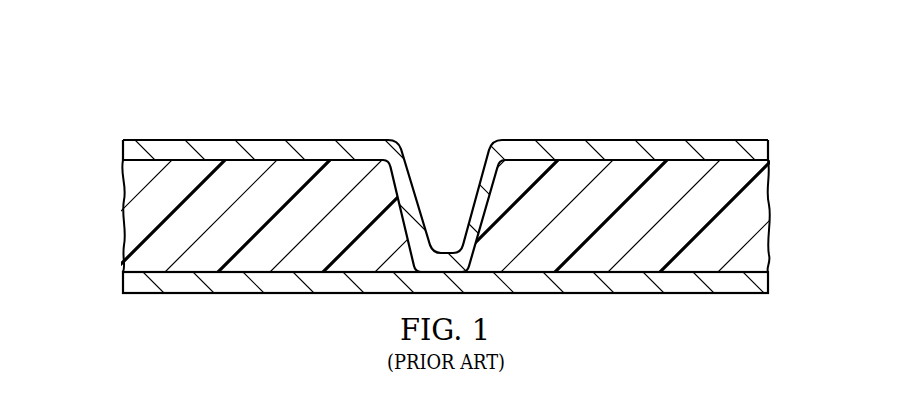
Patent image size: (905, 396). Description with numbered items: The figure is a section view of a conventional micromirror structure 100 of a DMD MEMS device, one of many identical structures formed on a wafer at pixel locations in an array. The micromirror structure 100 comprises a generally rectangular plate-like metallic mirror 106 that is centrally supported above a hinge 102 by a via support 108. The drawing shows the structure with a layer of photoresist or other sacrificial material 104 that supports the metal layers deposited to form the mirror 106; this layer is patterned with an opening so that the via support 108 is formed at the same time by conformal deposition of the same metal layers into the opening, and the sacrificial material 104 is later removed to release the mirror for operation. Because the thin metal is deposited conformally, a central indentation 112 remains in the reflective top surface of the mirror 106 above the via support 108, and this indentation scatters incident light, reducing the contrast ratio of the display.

The micromirror structure 100 is at (348, 71).
The hinge 102 is at (128, 283).
The sacrificial material 104 is at (124, 193).
The mirror 106 is at (762, 147).
The via support 108 is at (476, 117).
The central indentation 112 is at (415, 195).